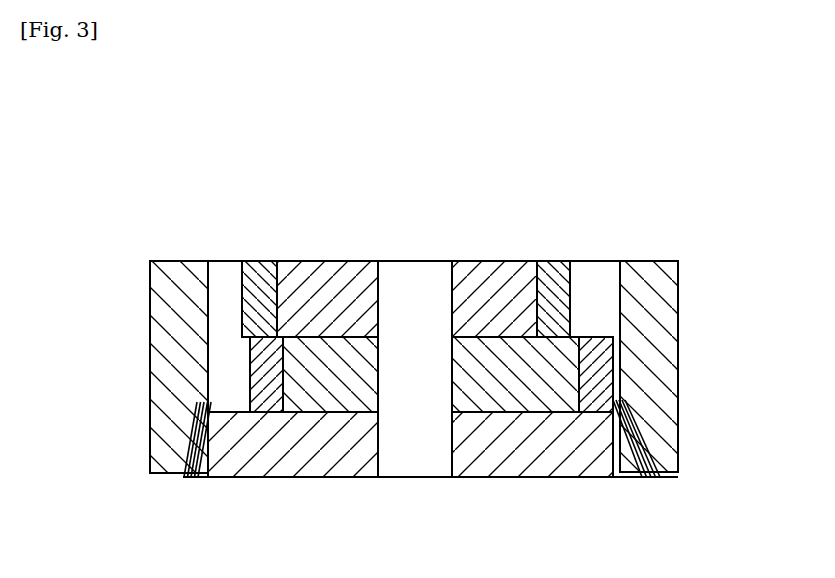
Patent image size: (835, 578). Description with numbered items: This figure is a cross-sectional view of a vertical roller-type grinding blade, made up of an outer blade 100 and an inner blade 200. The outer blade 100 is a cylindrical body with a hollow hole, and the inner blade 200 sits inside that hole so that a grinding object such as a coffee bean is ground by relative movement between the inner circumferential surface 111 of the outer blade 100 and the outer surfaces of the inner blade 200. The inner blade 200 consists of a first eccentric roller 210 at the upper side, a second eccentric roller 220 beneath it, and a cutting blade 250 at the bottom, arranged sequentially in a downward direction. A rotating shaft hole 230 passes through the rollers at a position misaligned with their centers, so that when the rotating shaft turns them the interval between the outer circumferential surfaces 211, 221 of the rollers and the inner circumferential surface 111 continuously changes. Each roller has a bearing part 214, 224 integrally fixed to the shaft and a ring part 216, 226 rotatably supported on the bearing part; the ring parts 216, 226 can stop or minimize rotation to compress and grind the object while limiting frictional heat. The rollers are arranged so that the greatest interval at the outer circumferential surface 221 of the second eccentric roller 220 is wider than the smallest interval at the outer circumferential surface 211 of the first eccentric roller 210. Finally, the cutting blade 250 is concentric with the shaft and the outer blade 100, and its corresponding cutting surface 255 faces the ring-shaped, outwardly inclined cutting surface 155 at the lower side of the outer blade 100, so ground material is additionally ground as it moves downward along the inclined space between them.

The outer blade 100 is at (150, 323).
The inner circumferential surface of the outer blade 111 is at (208, 279).
The cutting surface of the outer blade 155 is at (205, 420).
The inner blade 200 is at (482, 283).
The first eccentric roller 210 is at (318, 274).
The outer circumferential surface of the first eccentric roller 211 is at (243, 296).
The bearing part of the first eccentric roller 214 is at (333, 262).
The ring part of the first eccentric roller 216 is at (262, 261).
The second eccentric roller 220 is at (553, 274).
The outer circumferential surface of the second eccentric roller 221 is at (250, 366).
The bearing part of the second eccentric roller 224 is at (503, 350).
The ring part of the second eccentric roller 226 is at (596, 297).
The rotating shaft hole 230 is at (423, 262).
The cutting blade 250 is at (590, 483).
The corresponding cutting surface 255 is at (205, 474).